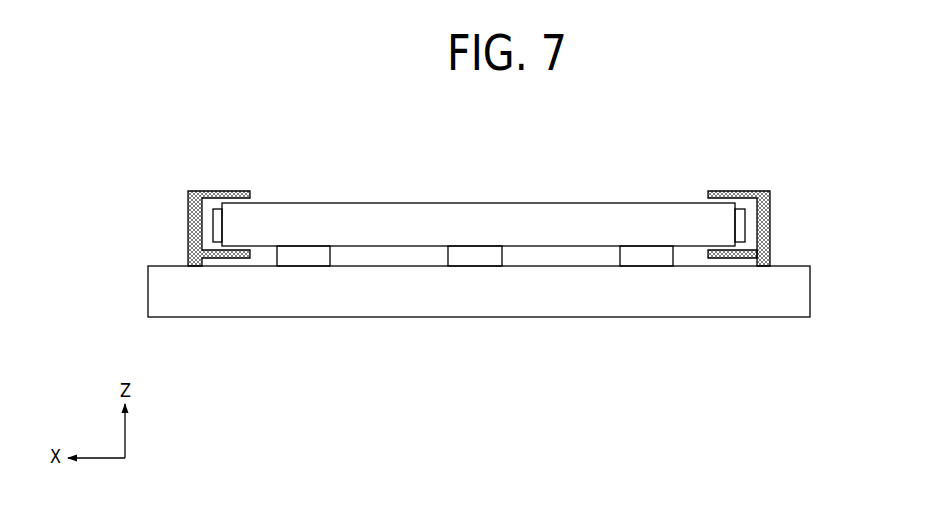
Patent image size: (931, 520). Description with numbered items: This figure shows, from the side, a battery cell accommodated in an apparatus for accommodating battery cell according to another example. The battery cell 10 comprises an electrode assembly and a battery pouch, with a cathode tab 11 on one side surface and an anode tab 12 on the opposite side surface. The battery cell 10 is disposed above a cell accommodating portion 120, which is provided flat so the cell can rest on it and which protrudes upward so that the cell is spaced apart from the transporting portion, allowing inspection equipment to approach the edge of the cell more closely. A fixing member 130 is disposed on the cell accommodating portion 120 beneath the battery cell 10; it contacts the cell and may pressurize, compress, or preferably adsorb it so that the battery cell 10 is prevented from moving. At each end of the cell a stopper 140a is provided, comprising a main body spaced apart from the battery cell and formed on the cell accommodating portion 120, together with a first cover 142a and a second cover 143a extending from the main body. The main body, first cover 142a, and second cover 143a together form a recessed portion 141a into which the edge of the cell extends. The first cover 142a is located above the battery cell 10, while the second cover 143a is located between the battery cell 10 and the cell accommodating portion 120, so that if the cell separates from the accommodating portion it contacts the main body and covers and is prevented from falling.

The battery cell 10 is at (488, 203).
The cathode tab 11 is at (214, 229).
The anode tab 12 is at (744, 222).
The cell accommodating portion 120 is at (148, 290).
The fixing member 130 is at (675, 253).
The stopper 140a is at (188, 199).
The recessed portion 141a is at (712, 209).
The first cover 142a is at (742, 184).
The second cover 143a is at (736, 262).